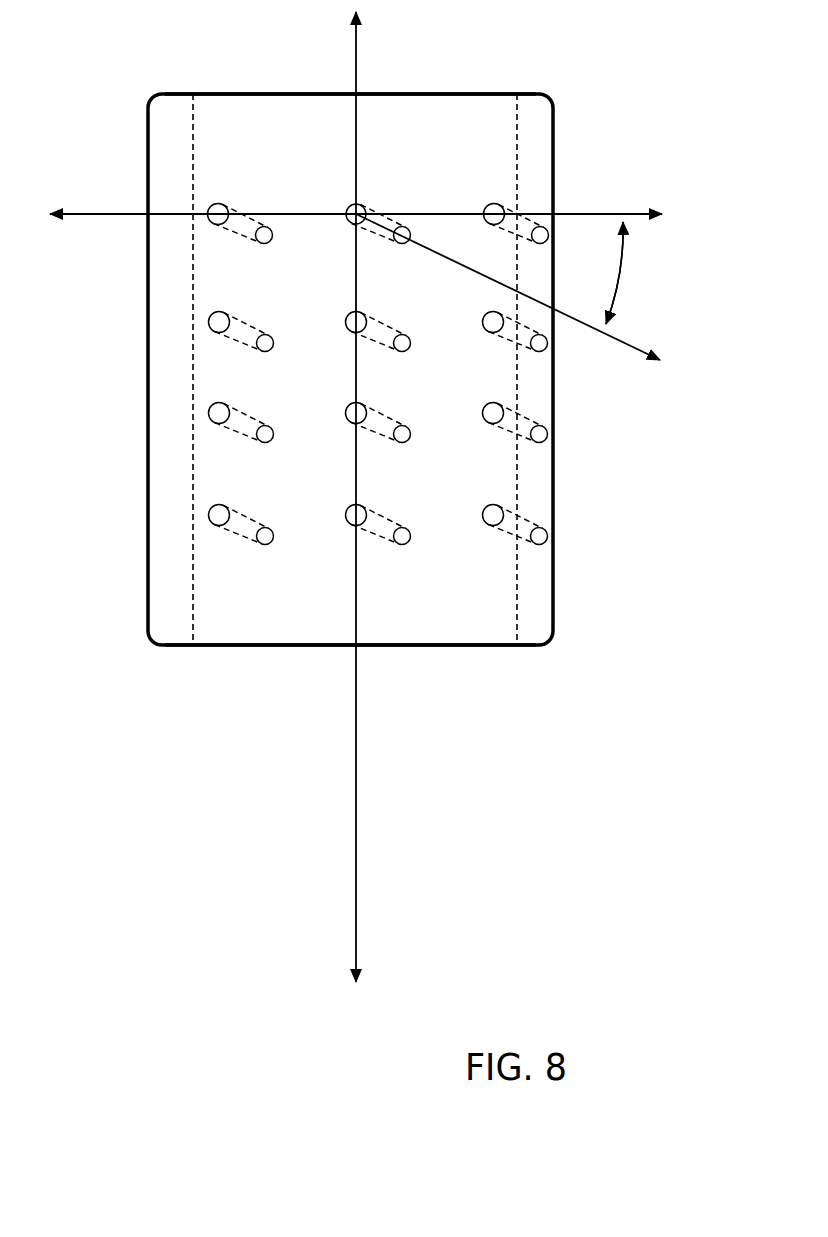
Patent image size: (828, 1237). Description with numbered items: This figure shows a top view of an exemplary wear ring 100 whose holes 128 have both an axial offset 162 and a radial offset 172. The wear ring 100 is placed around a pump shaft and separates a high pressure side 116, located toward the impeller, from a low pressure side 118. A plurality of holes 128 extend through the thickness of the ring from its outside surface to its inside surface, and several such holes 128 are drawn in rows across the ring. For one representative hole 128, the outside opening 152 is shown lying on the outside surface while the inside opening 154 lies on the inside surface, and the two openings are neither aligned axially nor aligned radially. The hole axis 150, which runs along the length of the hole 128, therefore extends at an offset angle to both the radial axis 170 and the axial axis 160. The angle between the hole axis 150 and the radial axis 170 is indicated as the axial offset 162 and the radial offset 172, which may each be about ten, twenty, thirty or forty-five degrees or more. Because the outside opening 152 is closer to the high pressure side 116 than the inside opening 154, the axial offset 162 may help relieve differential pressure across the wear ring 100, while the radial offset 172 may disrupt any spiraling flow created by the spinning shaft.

The wear ring 100 is at (140, 77).
The high pressure side 116 is at (474, 95).
The low pressure side 118 is at (497, 647).
The holes 128 is at (379, 213).
The outside opening 152 is at (352, 207).
The inside opening 154 is at (404, 245).
The hole axis 150 is at (625, 348).
The axial axis 160 is at (356, 830).
The radial axis 170 is at (598, 214).
The axial offset 162 is at (620, 262).
The radial offset 172 is at (613, 303).